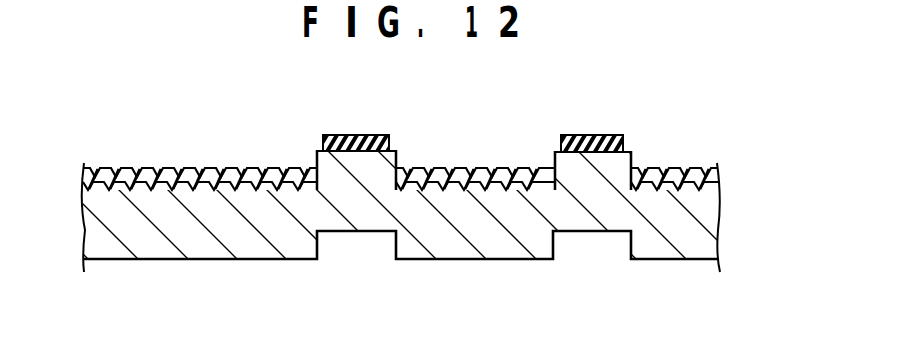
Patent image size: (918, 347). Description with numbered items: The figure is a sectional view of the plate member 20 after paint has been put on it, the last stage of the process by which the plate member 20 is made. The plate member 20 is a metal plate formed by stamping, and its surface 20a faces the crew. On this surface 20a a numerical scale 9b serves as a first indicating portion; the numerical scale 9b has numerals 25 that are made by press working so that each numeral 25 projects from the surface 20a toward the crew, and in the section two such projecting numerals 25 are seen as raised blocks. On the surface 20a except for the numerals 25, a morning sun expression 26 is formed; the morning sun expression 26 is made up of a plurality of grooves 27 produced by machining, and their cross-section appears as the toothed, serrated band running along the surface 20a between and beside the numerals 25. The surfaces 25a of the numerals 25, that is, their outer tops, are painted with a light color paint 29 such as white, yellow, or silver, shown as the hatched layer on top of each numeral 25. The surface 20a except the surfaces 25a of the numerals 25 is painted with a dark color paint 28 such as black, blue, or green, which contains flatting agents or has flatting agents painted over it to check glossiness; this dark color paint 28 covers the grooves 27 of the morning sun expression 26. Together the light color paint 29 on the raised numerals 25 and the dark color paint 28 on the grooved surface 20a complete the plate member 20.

The plate member 20 is at (693, 167).
The surface 20a is at (640, 187).
The numerals 25 is at (405, 153).
The surfaces of the numerals 25a is at (376, 138).
The morning sun expression 26 is at (133, 61).
The grooves 27 is at (227, 168).
The dark color paint 28 is at (248, 168).
The light color paint 29 is at (356, 135).
The numerical scale 9b is at (514, 55).